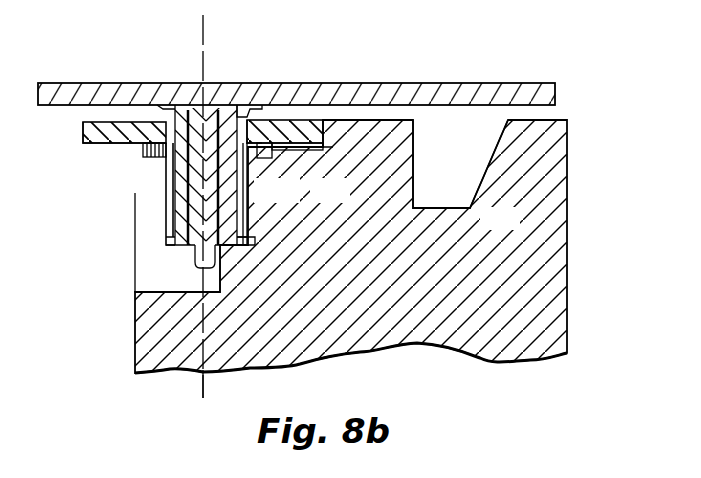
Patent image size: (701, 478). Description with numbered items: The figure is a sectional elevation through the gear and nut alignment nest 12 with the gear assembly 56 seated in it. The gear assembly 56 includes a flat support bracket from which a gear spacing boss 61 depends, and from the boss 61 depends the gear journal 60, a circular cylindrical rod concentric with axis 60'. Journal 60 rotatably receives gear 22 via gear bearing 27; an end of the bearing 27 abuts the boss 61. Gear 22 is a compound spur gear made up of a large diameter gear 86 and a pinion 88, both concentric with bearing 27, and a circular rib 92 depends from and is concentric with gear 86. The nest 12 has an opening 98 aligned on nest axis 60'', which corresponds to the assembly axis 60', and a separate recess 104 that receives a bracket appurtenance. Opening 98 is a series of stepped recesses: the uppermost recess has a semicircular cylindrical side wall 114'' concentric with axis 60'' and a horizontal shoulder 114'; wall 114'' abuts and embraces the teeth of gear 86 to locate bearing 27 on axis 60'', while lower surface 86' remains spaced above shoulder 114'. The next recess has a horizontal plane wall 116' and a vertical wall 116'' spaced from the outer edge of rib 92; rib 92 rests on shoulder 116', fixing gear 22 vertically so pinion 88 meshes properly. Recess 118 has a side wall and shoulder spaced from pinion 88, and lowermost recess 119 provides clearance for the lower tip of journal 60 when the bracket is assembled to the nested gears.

The gear and nut alignment nest 12 is at (568, 318).
The gear 22 is at (165, 198).
The gear bearing 27 is at (217, 255).
The gear assembly 56 is at (414, 92).
The gear journal 60 is at (262, 194).
The axis 60' is at (186, 206).
The nest axis 60'' is at (181, 393).
The gear spacing boss 61 is at (236, 100).
The large diameter gear 86 is at (203, 93).
The lower surface 86' is at (107, 150).
The pinion 88 is at (185, 240).
The circular rib 92 is at (143, 152).
The gear alignment opening 98 is at (129, 246).
The recess 104 is at (473, 206).
The horizontal shoulder 114' is at (309, 174).
The vertical side wall 114'' is at (352, 148).
The horizontal plane wall 116' is at (263, 93).
The vertical semicircular cylindrical segment wall 116'' is at (277, 174).
The recess 118 is at (246, 250).
The lowermost recess 119 is at (145, 275).